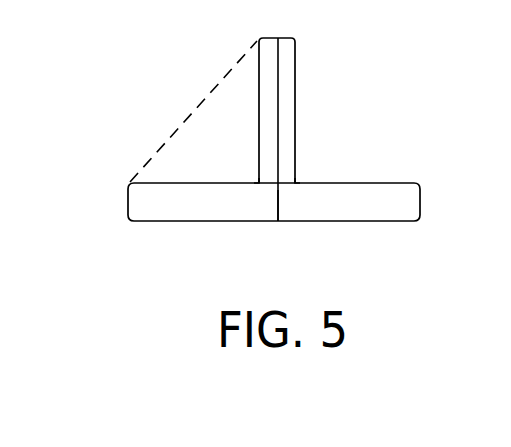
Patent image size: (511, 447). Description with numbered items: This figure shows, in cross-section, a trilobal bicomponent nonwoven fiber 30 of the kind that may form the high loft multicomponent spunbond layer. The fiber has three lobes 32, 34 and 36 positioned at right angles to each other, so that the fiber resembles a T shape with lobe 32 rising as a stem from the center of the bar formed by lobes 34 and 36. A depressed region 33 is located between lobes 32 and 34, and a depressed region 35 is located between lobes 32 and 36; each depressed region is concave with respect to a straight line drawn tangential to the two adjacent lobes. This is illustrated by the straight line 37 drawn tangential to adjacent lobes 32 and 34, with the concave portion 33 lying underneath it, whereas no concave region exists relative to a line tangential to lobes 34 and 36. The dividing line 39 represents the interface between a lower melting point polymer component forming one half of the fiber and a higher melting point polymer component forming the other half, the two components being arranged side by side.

The trilobal bicomponent nonwoven fiber 30 is at (366, 93).
The lobe 32 is at (293, 50).
The depressed region 33 is at (258, 182).
The lobe 34 is at (150, 205).
The depressed region 35 is at (296, 183).
The lobe 36 is at (404, 206).
The straight line 37 is at (226, 79).
The dividing line 39 is at (279, 199).